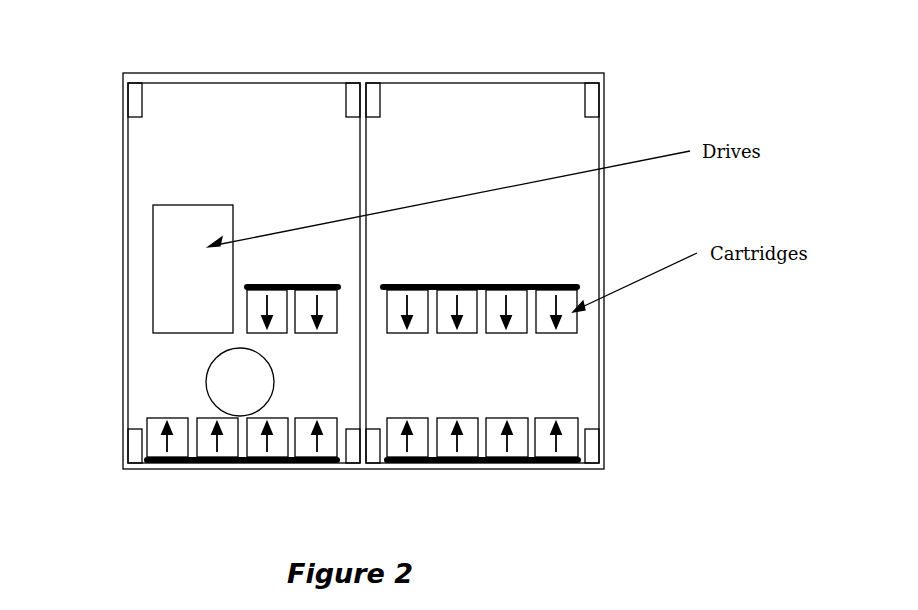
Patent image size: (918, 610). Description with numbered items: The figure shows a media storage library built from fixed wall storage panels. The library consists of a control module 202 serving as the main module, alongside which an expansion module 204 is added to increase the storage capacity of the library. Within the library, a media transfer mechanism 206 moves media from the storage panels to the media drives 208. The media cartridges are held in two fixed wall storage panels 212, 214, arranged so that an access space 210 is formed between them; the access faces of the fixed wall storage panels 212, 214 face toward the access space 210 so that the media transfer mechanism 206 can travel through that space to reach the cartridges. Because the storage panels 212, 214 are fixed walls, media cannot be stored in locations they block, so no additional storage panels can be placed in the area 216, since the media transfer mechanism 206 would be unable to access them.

The control module 202 is at (217, 83).
The expansion module 204 is at (487, 83).
The media transfer mechanism 206 is at (215, 385).
The media drives 208 is at (157, 250).
The access space 210 is at (615, 338).
The fixed wall storage panel 212 is at (572, 269).
The fixed wall storage panel 214 is at (580, 484).
The area 216 is at (302, 210).